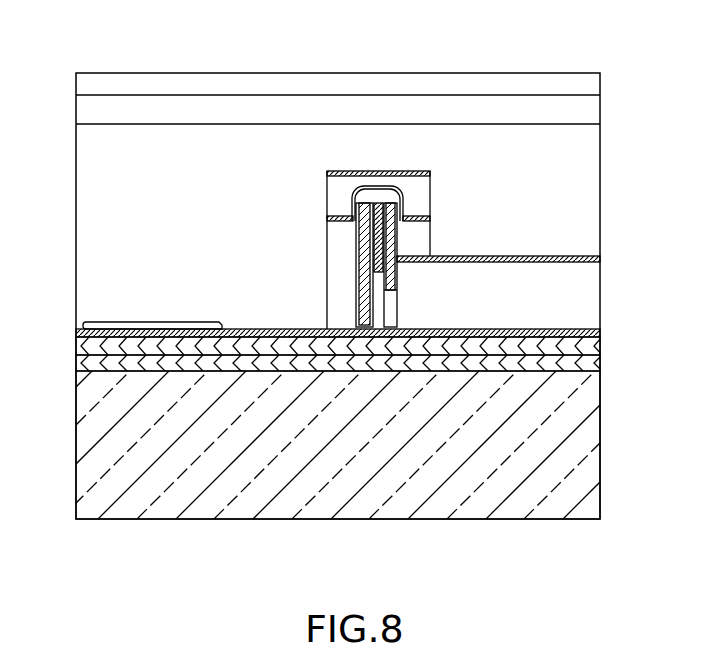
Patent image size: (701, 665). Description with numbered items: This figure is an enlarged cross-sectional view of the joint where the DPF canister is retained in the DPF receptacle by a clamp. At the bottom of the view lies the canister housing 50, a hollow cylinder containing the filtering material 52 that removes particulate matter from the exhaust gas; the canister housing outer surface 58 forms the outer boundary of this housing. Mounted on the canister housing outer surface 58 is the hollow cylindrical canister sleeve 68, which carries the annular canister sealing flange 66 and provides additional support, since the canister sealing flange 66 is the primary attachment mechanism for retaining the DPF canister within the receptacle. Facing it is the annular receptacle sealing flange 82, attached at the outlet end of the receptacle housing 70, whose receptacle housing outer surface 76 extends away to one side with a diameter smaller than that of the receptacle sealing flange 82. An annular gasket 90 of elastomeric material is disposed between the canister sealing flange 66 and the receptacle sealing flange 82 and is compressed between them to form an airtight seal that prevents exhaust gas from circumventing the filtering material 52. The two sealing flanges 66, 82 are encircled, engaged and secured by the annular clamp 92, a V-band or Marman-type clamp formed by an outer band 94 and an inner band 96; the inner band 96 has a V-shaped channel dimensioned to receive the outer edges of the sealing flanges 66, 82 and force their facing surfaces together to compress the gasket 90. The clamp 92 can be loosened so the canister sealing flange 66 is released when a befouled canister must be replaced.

The filtering material 52 is at (530, 473).
The canister housing 50 is at (388, 314).
The canister housing outer surface 58 is at (577, 329).
The canister sleeve 68 is at (262, 328).
The receptacle housing 70 is at (533, 240).
The receptacle housing outer surface 76 is at (562, 256).
The clamp 92 is at (343, 188).
The outer band 94 is at (363, 174).
The inner band 96 is at (402, 207).
The canister sealing flange 66 is at (364, 278).
The gasket 90 is at (379, 206).
The receptacle sealing flange 82 is at (390, 247).